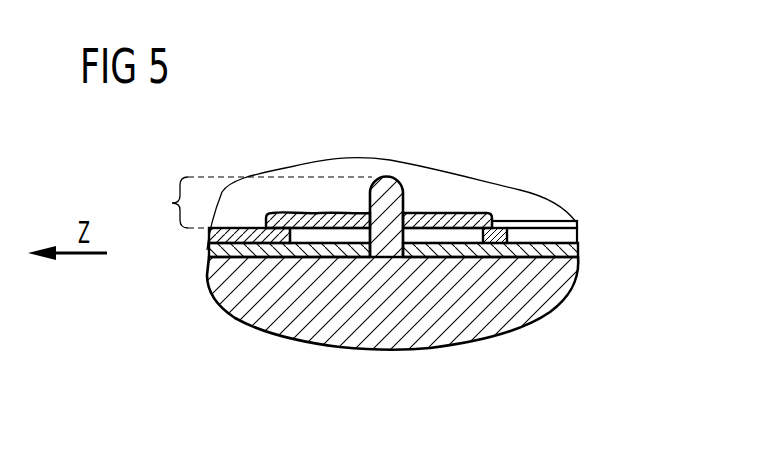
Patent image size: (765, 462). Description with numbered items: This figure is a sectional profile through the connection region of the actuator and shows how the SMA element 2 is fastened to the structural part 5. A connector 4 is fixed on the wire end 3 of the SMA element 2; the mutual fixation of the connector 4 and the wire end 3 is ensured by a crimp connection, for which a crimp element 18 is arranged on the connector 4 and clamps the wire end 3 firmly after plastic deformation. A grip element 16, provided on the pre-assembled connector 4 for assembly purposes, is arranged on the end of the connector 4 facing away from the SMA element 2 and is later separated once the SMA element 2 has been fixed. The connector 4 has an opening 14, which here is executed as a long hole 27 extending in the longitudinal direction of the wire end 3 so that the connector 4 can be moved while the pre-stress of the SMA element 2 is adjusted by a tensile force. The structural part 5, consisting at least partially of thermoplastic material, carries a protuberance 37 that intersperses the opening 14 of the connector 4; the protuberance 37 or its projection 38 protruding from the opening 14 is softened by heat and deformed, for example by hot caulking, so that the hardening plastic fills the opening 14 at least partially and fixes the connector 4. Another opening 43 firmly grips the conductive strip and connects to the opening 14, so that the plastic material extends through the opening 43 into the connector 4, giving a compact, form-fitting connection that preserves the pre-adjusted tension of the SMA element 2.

The SMA element 2 is at (547, 224).
The wire end 3 is at (521, 228).
The connector 4 is at (250, 221).
The structural part 5 is at (492, 315).
The opening 14 is at (483, 236).
The grip element 16 is at (207, 290).
The crimp element 18 is at (433, 218).
The long hole 27 is at (433, 236).
The protuberance 37 is at (383, 198).
The projection 38 is at (255, 202).
The opening 43 is at (383, 250).